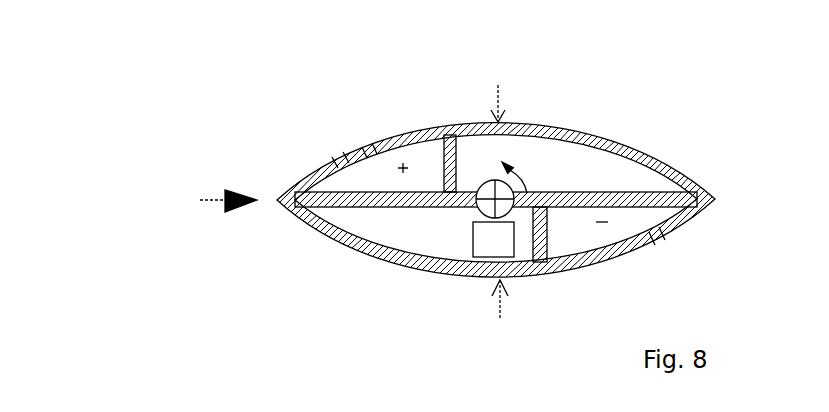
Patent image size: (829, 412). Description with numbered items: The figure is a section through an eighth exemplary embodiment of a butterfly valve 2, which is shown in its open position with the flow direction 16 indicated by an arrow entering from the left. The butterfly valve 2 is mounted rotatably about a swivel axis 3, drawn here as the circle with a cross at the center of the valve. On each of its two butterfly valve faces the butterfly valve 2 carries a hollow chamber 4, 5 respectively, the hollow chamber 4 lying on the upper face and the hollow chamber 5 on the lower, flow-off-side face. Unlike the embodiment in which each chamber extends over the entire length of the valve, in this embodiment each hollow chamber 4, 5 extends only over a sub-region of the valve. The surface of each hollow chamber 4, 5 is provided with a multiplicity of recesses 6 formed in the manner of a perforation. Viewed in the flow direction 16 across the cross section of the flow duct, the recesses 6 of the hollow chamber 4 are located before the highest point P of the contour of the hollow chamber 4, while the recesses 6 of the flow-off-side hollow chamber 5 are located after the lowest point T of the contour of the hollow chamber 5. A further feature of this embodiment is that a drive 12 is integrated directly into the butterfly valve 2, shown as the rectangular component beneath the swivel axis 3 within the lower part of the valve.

The butterfly valve 2 is at (534, 200).
The swivel axis 3 is at (494, 179).
The hollow chamber 4 is at (378, 157).
The hollow chamber 5 is at (580, 232).
The recesses 6 is at (333, 152).
The drive 12 is at (500, 250).
The flow direction 16 is at (205, 200).
The highest point P is at (499, 92).
The lowest point T is at (500, 308).